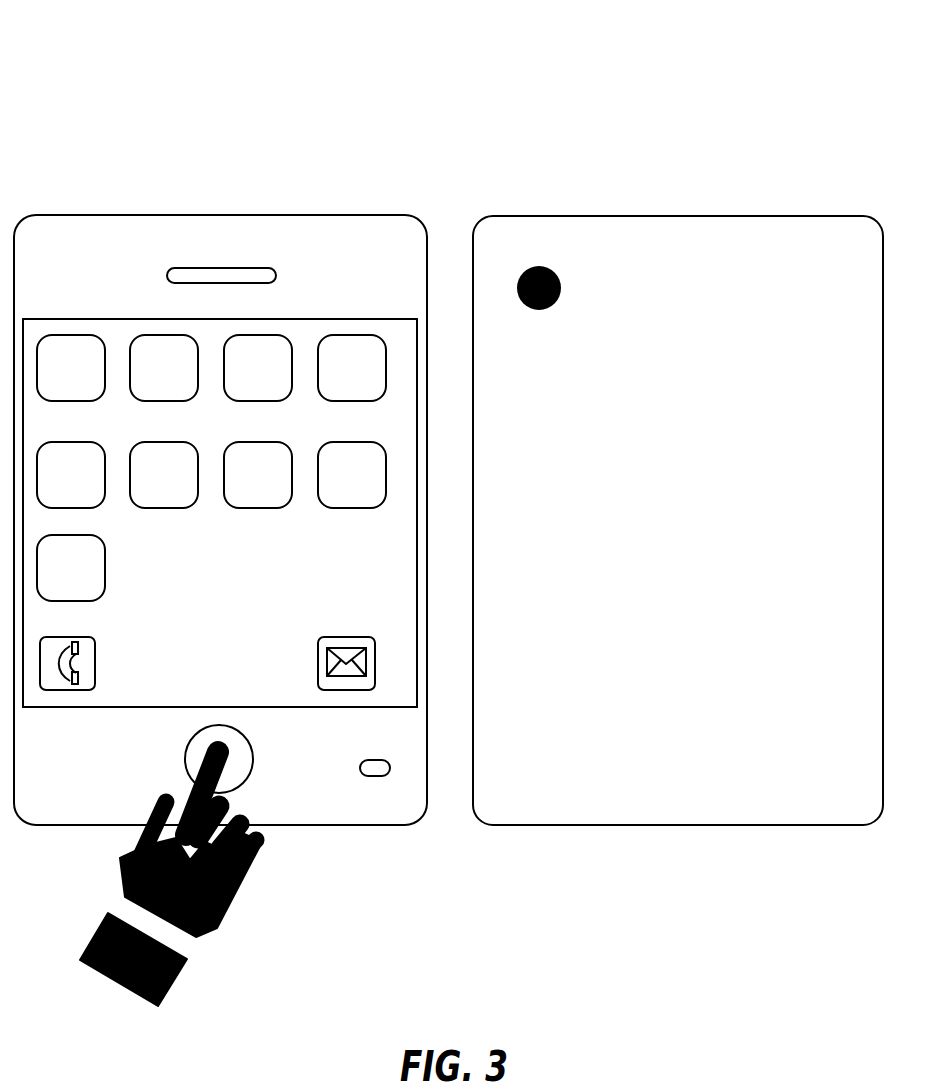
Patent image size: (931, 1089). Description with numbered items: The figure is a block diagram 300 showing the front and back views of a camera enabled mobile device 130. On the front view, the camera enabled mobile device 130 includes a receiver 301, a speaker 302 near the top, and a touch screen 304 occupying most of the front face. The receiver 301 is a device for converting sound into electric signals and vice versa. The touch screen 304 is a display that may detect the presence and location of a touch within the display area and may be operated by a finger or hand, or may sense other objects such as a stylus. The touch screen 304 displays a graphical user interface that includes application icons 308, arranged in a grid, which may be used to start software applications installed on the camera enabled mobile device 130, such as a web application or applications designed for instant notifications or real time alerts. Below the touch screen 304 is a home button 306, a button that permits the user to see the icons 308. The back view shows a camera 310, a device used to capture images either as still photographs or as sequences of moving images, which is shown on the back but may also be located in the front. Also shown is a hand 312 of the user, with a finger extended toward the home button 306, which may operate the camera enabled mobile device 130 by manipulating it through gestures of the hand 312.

The block diagram 300 is at (760, 65).
The camera enabled mobile device 130 is at (218, 215).
The receiver 301 is at (390, 768).
The speaker 302 is at (276, 279).
The touch screen 304 is at (417, 513).
The home button 306 is at (254, 757).
The application icons 308 is at (386, 367).
The camera 310 is at (537, 267).
The hand 312 is at (223, 917).